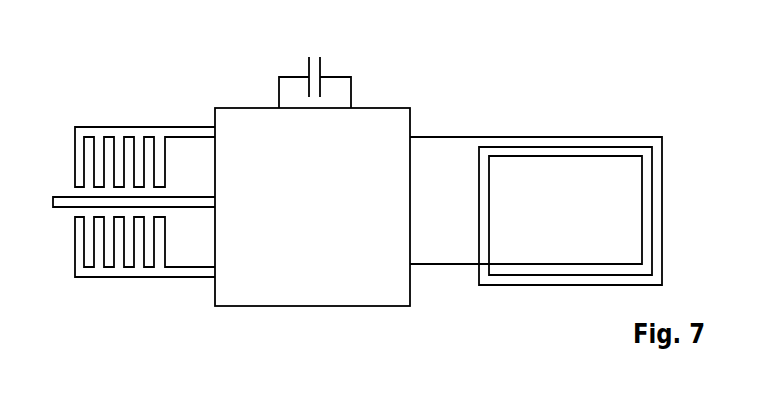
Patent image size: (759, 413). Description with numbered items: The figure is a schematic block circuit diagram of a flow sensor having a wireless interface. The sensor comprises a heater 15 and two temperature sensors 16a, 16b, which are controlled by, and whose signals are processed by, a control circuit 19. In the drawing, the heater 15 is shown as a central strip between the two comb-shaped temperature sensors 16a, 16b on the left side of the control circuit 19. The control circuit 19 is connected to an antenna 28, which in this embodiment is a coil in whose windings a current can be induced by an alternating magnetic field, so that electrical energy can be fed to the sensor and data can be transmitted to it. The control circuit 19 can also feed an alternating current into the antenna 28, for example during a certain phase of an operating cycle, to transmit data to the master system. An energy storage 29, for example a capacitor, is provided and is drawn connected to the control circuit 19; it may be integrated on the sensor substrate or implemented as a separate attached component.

The heater 15 is at (117, 175).
The temperature sensor 16a is at (145, 131).
The temperature sensor 16b is at (145, 272).
The control circuit 19 is at (312, 240).
The antenna 28 is at (518, 299).
The energy storage 29 is at (297, 67).